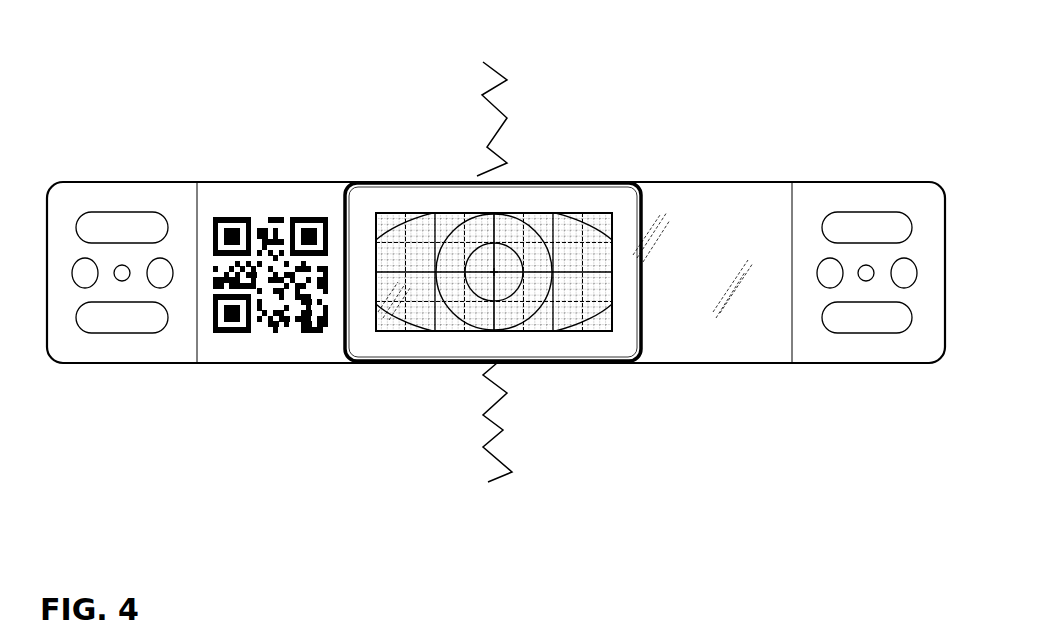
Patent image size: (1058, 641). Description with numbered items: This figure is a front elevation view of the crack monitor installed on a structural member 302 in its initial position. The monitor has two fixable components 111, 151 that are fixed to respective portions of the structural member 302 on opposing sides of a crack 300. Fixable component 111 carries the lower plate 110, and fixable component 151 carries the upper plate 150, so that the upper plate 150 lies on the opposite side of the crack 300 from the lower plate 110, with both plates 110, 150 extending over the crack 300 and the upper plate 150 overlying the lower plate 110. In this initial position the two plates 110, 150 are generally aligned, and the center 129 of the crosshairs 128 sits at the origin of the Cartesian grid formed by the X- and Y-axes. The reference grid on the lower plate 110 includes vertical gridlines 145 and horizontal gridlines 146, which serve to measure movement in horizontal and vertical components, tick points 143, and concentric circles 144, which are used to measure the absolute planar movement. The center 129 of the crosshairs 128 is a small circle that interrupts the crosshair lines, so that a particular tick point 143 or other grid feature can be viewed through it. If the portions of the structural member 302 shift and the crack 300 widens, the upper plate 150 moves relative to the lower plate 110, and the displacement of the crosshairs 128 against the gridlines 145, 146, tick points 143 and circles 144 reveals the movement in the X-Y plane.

The lower plate 110 is at (212, 179).
The fixable component 111 is at (269, 394).
The circles 144 is at (456, 221).
The horizontal gridlines 146 is at (457, 305).
The center of the crosshairs 129 is at (495, 267).
The vertical gridlines 145 is at (529, 234).
The crosshairs 128 is at (500, 279).
The tick points 143 is at (598, 292).
The upper plate 150 is at (746, 366).
The fixable component 151 is at (741, 149).
The crack 300 is at (476, 93).
The structural member 302 is at (513, 30).